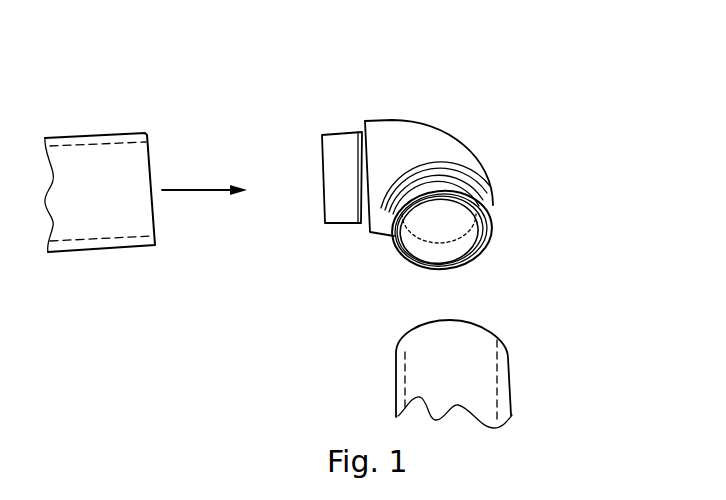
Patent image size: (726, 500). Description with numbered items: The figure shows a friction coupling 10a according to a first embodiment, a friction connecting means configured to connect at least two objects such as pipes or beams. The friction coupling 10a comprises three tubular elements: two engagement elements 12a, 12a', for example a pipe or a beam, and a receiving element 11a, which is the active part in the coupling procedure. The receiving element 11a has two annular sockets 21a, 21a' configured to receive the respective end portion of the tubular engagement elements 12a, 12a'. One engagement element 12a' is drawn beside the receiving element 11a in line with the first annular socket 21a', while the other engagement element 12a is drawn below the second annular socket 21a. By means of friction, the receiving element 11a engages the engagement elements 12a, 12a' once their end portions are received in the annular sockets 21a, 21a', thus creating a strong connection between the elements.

The friction coupling 10a is at (394, 82).
The receiving element 11a is at (466, 153).
The annular socket 21a is at (494, 230).
The annular socket 21a' is at (314, 138).
The engagement element 12a is at (508, 374).
The engagement element 12a' is at (100, 141).